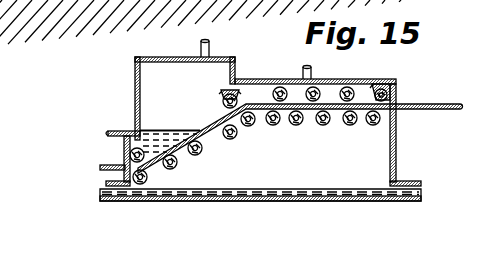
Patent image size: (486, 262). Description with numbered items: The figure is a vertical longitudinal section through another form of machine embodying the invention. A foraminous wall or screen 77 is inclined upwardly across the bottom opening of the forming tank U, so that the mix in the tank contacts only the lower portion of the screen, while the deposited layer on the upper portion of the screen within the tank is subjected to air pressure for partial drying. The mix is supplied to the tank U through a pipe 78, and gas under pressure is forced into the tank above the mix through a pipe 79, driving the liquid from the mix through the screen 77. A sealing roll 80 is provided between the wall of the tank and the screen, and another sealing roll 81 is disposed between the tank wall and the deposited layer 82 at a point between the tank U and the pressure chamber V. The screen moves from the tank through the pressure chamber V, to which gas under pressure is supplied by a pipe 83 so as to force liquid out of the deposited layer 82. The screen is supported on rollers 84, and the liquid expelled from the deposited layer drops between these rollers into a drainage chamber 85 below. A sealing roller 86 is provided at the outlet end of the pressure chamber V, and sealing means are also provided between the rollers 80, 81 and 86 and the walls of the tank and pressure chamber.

The forming tank U is at (147, 77).
The pressure chamber V is at (268, 78).
The foraminous wall or screen 77 is at (103, 165).
The pipe 78 is at (118, 130).
The pipe 79 is at (200, 45).
The sealing roll 80 is at (123, 154).
The sealing roll 81 is at (222, 99).
The deposited layer 82 is at (456, 101).
The pipe 83 is at (311, 70).
The rollers 84 is at (253, 128).
The drainage chamber 85 is at (368, 173).
The roller 86 is at (394, 87).